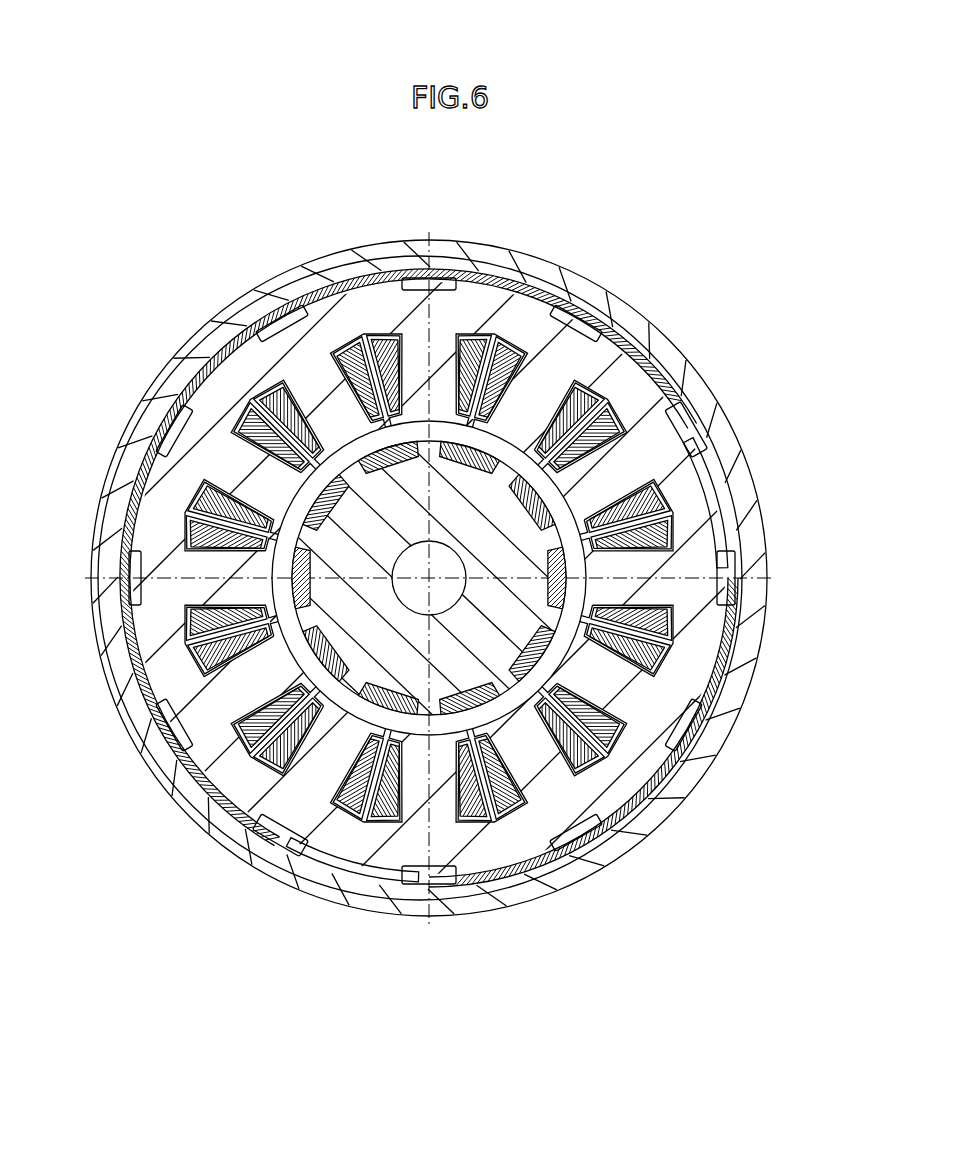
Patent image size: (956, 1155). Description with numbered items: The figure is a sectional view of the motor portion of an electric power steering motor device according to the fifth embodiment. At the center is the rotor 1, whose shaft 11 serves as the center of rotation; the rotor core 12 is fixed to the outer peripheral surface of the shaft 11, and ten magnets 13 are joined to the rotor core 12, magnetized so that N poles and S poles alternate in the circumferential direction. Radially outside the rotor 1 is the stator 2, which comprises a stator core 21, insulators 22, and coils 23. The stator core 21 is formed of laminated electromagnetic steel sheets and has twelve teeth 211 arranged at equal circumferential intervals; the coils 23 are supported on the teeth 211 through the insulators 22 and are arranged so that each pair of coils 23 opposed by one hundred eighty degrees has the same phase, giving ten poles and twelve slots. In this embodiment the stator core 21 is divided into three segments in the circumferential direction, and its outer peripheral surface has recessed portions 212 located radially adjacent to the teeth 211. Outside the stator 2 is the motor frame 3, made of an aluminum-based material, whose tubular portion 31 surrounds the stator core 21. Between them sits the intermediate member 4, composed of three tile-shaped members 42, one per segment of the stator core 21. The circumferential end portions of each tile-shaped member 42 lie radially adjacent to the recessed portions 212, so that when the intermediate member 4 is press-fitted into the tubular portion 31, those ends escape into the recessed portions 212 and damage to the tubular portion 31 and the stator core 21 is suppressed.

The rotor 1 is at (452, 886).
The shaft 11 is at (412, 598).
The rotor core 12 is at (546, 655).
The magnets 13 is at (498, 688).
The stator 2 is at (385, 280).
The stator core 21 is at (347, 307).
The teeth 211 is at (267, 327).
The recessed portions 212 is at (250, 318).
The insulators 22 is at (477, 325).
The coils 23 is at (510, 352).
The motor frame 3 is at (630, 310).
The tubular portion 31 is at (677, 373).
The intermediate member 4 is at (152, 433).
The tile-shaped members 42 is at (440, 268).